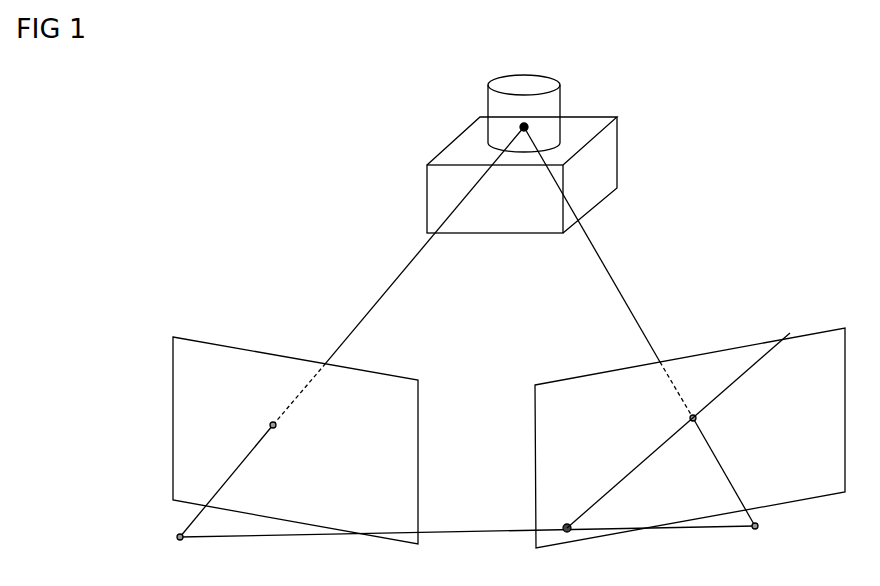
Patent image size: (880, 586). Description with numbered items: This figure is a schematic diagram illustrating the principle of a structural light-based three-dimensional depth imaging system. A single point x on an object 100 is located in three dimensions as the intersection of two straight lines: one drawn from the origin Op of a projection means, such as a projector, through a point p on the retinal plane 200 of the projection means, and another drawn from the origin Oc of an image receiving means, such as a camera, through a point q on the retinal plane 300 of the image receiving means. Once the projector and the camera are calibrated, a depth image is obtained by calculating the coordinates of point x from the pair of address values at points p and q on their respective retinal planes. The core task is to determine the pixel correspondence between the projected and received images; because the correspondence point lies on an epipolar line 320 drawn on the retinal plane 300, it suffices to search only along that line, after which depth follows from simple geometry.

The object 100 is at (560, 92).
The retinal plane of the projection means 200 is at (184, 337).
The retinal plane of the image receiving means 300 is at (708, 352).
The epipolar line 320 is at (794, 329).